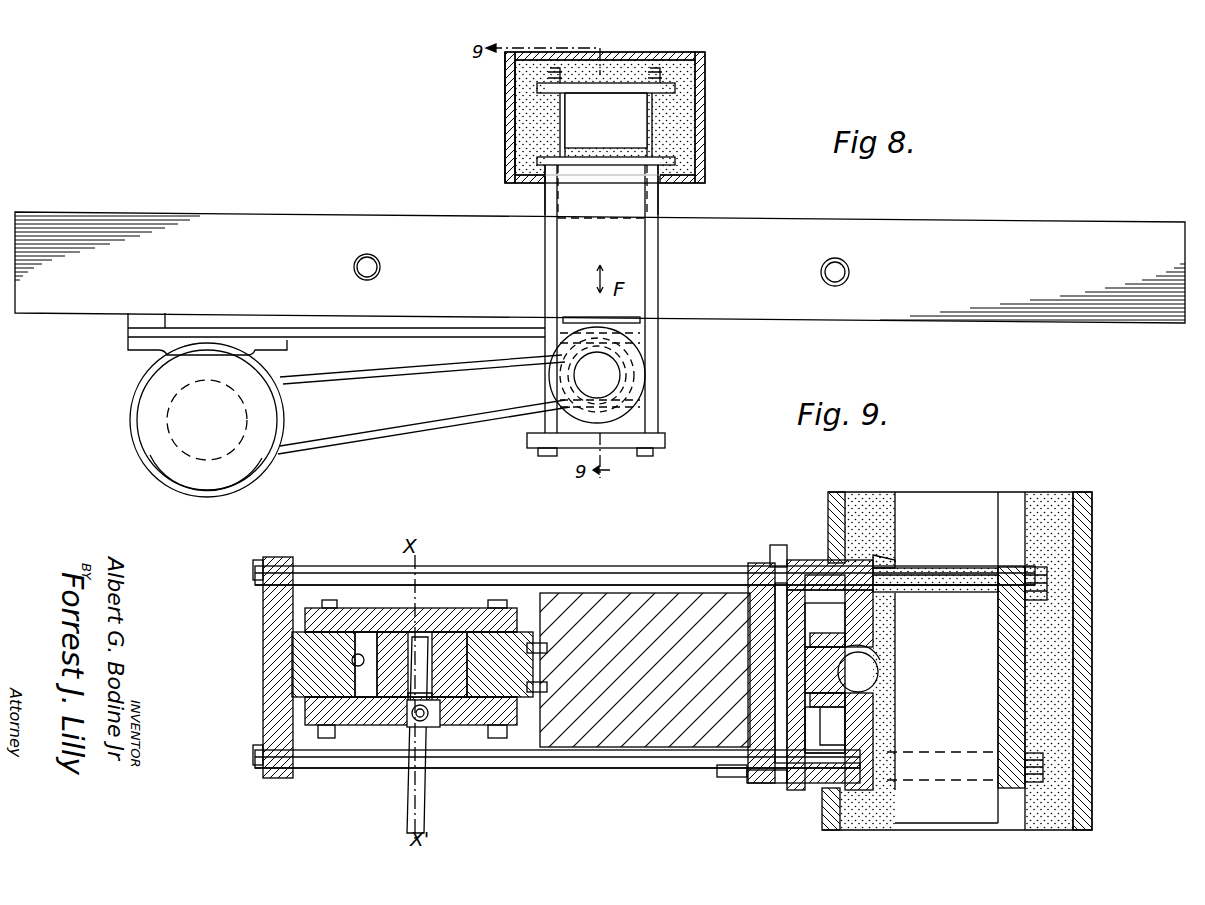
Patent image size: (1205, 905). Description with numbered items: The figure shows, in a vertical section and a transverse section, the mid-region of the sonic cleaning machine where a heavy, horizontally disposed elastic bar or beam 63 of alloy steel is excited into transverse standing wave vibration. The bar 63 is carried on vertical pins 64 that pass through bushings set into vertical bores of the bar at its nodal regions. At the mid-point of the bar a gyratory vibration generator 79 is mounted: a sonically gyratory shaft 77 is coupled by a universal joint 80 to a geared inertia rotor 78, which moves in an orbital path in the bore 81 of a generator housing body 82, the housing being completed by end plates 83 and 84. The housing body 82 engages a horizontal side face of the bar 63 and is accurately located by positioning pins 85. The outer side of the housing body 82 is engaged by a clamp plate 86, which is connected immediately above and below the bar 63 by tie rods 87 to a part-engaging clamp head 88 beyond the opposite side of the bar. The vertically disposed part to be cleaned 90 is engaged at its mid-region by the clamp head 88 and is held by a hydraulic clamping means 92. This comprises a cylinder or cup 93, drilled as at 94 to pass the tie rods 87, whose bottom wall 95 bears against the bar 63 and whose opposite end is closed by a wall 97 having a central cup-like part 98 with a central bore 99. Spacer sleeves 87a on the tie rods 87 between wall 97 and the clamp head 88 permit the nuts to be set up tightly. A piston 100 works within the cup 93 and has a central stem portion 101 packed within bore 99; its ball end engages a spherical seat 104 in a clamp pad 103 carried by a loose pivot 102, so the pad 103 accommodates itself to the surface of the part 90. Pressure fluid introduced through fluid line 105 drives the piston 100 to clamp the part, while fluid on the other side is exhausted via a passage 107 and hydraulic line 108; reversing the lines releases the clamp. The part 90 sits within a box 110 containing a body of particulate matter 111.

In FIG. 8, the elastic bar or beam 63 is at (875, 313).
In FIG. 9, the elastic bar or beam 63 is at (655, 605).
In FIG. 8, the vertical pins 64 is at (372, 266).
In FIG. 9, the sonically gyratory shaft 77 is at (427, 805).
In FIG. 9, the inertia rotor 78 is at (455, 650).
In FIG. 9, the vibration generator 79 is at (365, 606).
In FIG. 8, the universal joint 80 is at (650, 348).
In FIG. 9, the universal joint 80 is at (416, 720).
In FIG. 9, the bore 81 is at (355, 668).
In FIG. 9, the generator housing body 82 is at (355, 660).
In FIG. 9, the end plate 83 is at (305, 615).
In FIG. 8, the end plate 84 is at (668, 443).
In FIG. 9, the end plate 84 is at (305, 712).
In FIG. 8, the positioning pins 85 is at (660, 288).
In FIG. 9, the positioning pins 85 is at (532, 702).
In FIG. 9, the clamp plate 86 is at (282, 557).
In FIG. 9, the tie rods 87 is at (582, 566).
In FIG. 9, the spacer sleeves 87a is at (915, 567).
In FIG. 8, the clamp head 88 is at (688, 91).
In FIG. 9, the clamp head 88 is at (1030, 625).
In FIG. 8, the part to be cleaned 90 is at (635, 124).
In FIG. 9, the part to be cleaned 90 is at (978, 500).
In FIG. 8, the hydraulic clamping means 92 is at (670, 199).
In FIG. 9, the hydraulic clamping means 92 is at (808, 560).
In FIG. 8, the cylinder or cup 93 is at (543, 199).
In FIG. 9, the cylinder or cup 93 is at (762, 563).
In FIG. 8, the drilled holes 94 is at (645, 193).
In FIG. 9, the drilled holes 94 is at (818, 565).
In FIG. 9, the bottom wall 95 is at (750, 620).
In FIG. 9, the wall 97 is at (897, 612).
In FIG. 9, the cup-like part 98 is at (835, 723).
In FIG. 9, the central bore 99 is at (893, 703).
In FIG. 9, the piston 100 is at (790, 785).
In FIG. 9, the stem portion 101 is at (840, 682).
In FIG. 9, the loose pivot 102 is at (865, 672).
In FIG. 9, the clamp pad 103 is at (893, 642).
In FIG. 9, the spherical seat 104 is at (893, 655).
In FIG. 9, the fluid line 105 is at (775, 545).
In FIG. 9, the passage 107 is at (758, 783).
In FIG. 9, the hydraulic line 108 is at (722, 777).
In FIG. 8, the box 110 is at (507, 105).
In FIG. 9, the box 110 is at (1092, 553).
In FIG. 8, the particulate matter 111 is at (505, 136).
In FIG. 9, the particulate matter 111 is at (1050, 495).